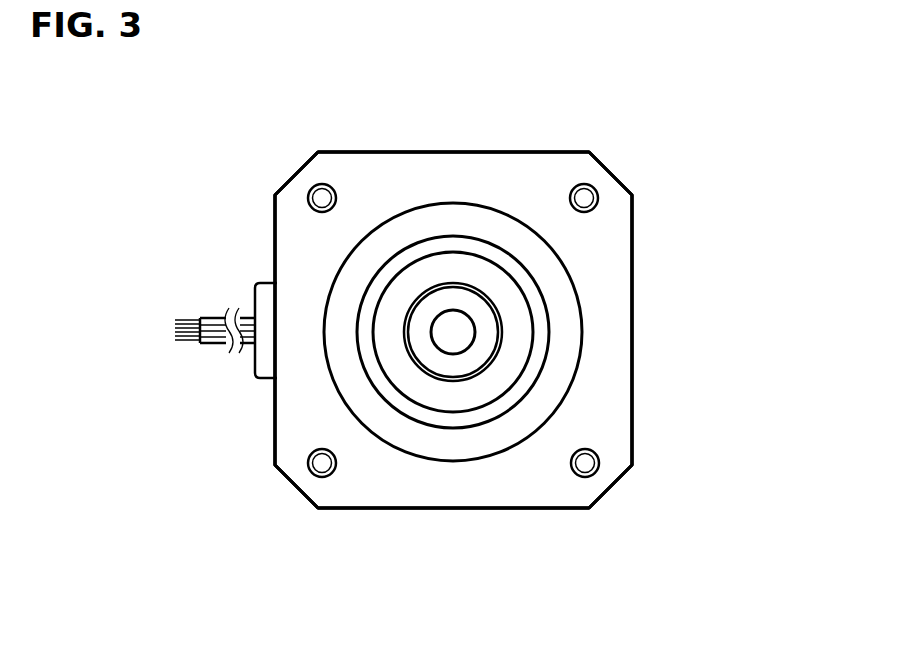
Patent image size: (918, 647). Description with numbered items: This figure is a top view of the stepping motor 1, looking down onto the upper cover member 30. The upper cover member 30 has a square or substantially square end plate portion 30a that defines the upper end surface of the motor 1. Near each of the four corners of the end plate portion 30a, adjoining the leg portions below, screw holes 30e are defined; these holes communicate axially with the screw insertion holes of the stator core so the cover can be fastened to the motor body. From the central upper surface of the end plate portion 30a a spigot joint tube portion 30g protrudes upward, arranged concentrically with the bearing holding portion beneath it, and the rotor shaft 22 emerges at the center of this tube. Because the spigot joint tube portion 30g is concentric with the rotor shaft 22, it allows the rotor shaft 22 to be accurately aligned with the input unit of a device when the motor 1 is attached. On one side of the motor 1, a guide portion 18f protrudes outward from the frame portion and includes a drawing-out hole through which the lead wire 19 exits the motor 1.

The motor 1 is at (703, 102).
The upper cover member 30 is at (632, 241).
The end plate portion 30a is at (604, 377).
The screw holes 30e is at (313, 190).
The spigot joint tube portion 30g is at (467, 237).
The rotor shaft 22 is at (453, 337).
The guide portion 18f is at (253, 296).
The lead wire 19 is at (213, 345).